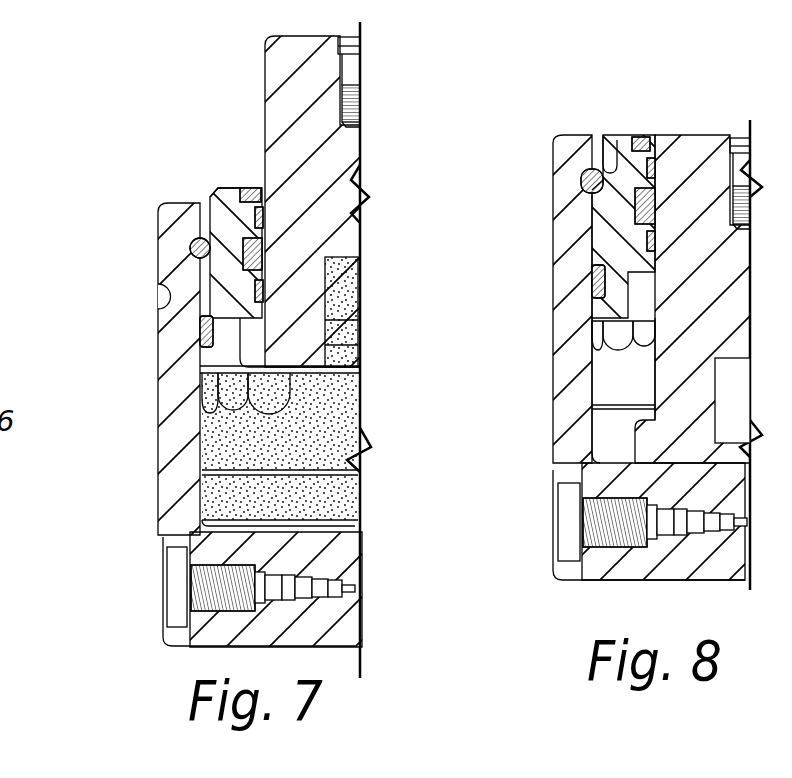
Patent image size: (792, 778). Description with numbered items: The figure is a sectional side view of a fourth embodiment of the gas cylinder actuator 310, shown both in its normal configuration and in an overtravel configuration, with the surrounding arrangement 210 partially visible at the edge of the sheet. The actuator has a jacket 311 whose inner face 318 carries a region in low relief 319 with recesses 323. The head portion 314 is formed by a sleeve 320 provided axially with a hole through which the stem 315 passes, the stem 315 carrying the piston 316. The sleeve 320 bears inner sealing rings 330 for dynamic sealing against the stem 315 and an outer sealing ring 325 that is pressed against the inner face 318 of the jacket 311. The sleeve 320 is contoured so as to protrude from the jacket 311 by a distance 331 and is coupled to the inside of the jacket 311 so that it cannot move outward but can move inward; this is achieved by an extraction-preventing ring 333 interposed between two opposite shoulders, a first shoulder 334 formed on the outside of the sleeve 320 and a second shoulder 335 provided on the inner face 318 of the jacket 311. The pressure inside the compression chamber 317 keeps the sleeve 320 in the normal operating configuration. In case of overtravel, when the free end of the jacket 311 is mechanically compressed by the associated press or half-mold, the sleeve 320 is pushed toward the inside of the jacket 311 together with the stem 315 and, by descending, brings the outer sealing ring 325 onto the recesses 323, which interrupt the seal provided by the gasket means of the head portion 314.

In FIG. 7, the dispensing assembly 210 is at (0, 50).
In FIG. 7, the gas cylinder actuator 310 is at (150, 180).
In FIG. 7, the jacket 311 is at (170, 503).
In FIG. 7, the head portion 314 is at (228, 165).
In FIG. 7, the stem 315 is at (332, 148).
In FIG. 7, the piston 316 is at (290, 343).
In FIG. 7, the compression chamber 317 is at (318, 497).
In FIG. 7, the inner face 318 is at (203, 468).
In FIG. 7, the region in low relief 319 is at (312, 393).
In FIG. 7, the sleeve 320 is at (232, 275).
In FIG. 8, the sleeve 320 is at (622, 237).
In FIG. 7, the recesses 323 is at (233, 376).
In FIG. 7, the outer sealing ring 325 is at (200, 322).
In FIG. 7, the inner sealing rings 330 is at (268, 250).
In FIG. 7, the distance 331 is at (213, 200).
In FIG. 7, the extraction-preventing ring 333 is at (190, 250).
In FIG. 8, the extraction-preventing ring 333 is at (613, 143).
In FIG. 8, the first shoulder 334 is at (572, 201).
In FIG. 8, the second shoulder 335 is at (581, 173).